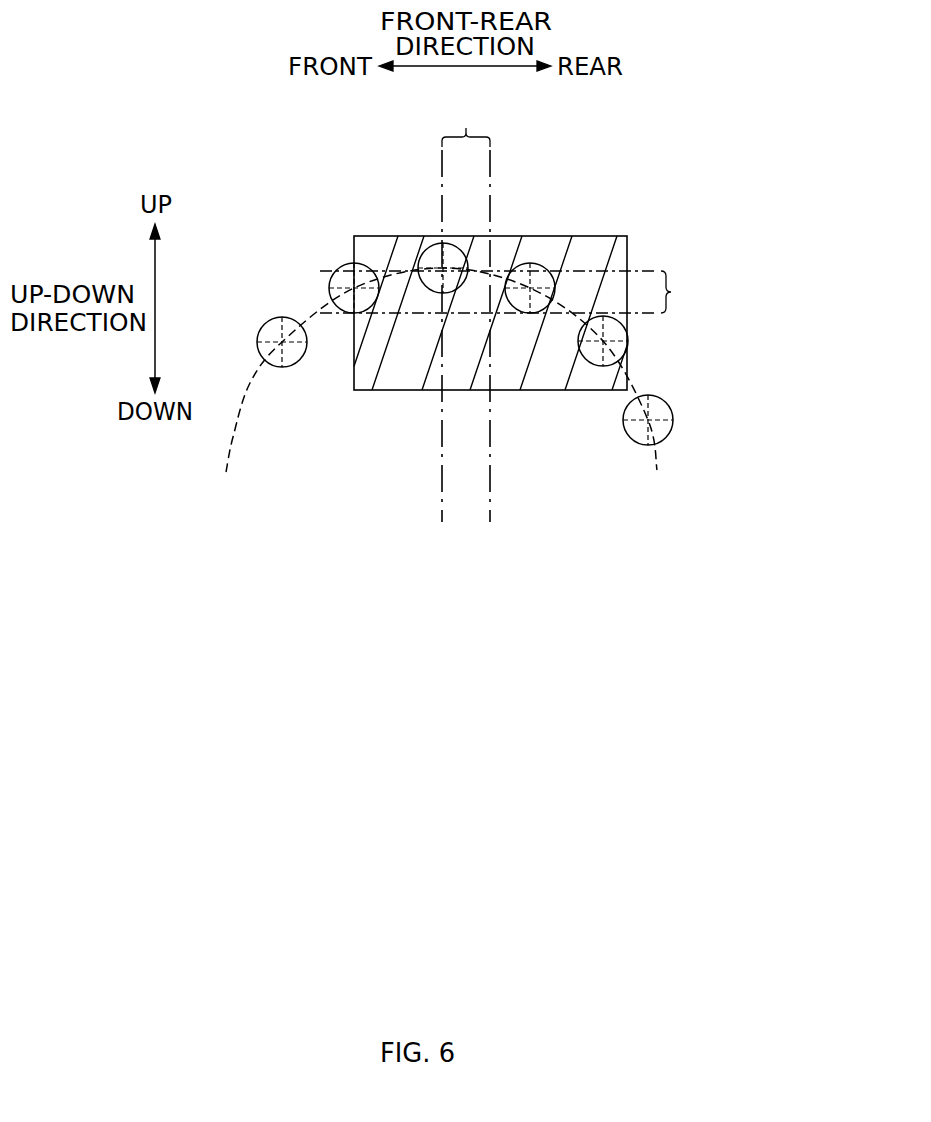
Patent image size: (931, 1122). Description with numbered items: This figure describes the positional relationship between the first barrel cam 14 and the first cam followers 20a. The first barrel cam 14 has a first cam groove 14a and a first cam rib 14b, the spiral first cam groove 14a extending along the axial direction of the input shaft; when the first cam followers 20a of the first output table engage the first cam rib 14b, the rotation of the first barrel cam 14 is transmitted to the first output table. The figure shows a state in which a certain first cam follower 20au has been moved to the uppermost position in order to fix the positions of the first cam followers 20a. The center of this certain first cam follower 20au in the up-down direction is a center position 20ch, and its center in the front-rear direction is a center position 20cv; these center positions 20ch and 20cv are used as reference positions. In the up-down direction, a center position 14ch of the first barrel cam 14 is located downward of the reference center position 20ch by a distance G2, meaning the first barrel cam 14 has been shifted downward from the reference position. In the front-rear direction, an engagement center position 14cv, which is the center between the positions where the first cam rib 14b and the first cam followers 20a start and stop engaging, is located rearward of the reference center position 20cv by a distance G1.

The first barrel cam 14 is at (499, 280).
The first cam groove 14a is at (543, 250).
The first cam rib 14b is at (593, 250).
The engagement center position 14cv is at (490, 163).
The center position of the first barrel cam 14ch is at (648, 319).
The first cam follower 20a is at (665, 430).
The certain first cam follower 20au is at (426, 252).
The center position 20cv is at (442, 163).
The center position 20ch is at (643, 266).
The distance G1 is at (466, 121).
The distance G2 is at (689, 292).